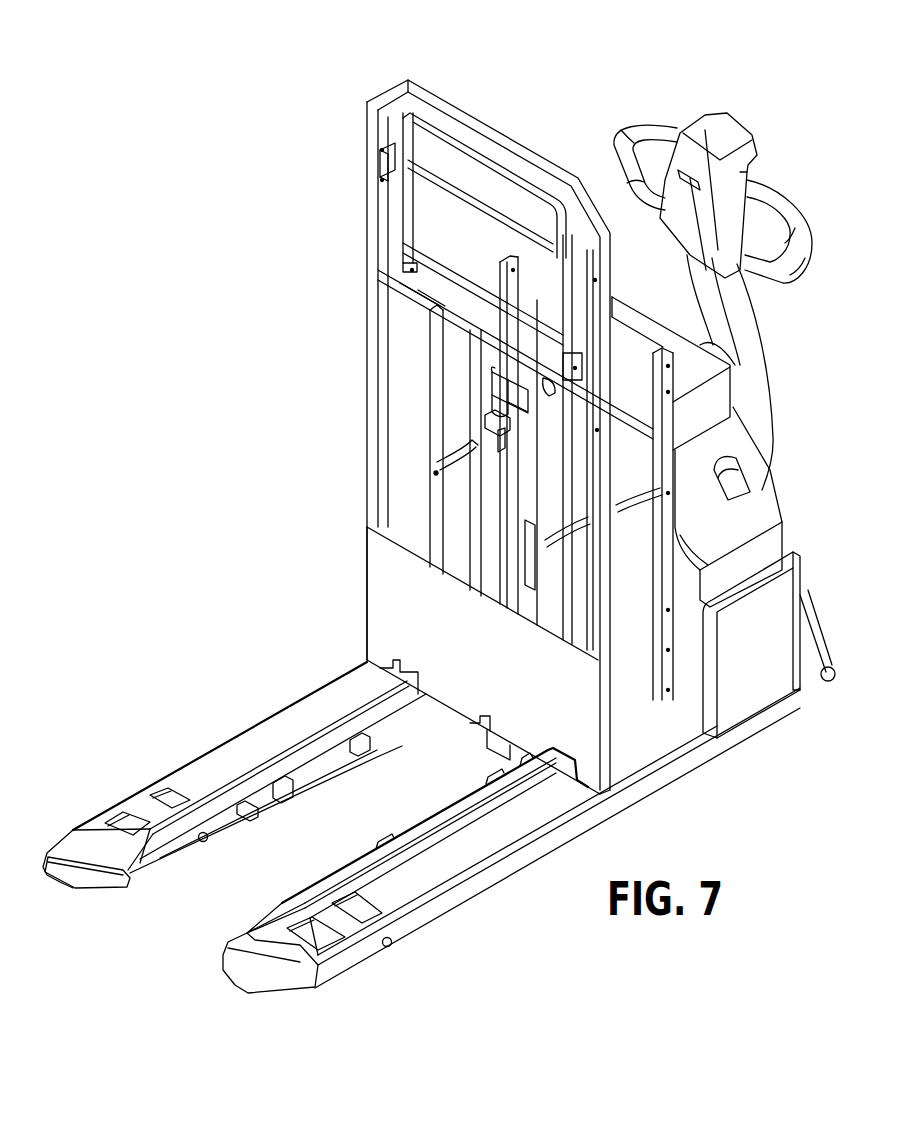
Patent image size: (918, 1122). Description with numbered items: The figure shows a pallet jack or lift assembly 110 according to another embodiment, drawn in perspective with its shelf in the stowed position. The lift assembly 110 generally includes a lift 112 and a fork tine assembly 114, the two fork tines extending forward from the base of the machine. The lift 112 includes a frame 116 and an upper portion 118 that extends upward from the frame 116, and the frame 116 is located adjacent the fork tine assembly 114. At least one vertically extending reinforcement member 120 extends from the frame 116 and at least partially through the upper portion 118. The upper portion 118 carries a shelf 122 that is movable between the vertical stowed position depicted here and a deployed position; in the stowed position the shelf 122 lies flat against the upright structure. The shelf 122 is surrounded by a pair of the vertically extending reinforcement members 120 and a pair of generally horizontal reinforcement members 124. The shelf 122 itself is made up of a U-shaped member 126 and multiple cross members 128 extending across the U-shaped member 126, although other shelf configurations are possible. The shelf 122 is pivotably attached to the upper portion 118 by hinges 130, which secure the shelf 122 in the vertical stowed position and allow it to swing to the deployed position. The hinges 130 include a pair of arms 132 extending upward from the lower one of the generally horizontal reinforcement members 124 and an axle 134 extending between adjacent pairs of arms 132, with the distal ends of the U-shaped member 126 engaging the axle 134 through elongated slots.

The lift assembly 110 is at (160, 197).
The lift 112 is at (260, 328).
The fork tine assembly 114 is at (183, 717).
The frame 116 is at (352, 598).
The upper portion 118 is at (341, 427).
The vertically extending reinforcement member 120 is at (366, 160).
The shelf 122 is at (382, 207).
The generally horizontal reinforcement member 124 is at (497, 130).
The U-shaped member 126 is at (377, 222).
The cross member 128 is at (472, 283).
The hinge 130 is at (378, 255).
The arm 132 is at (420, 290).
The axle 134 is at (440, 298).